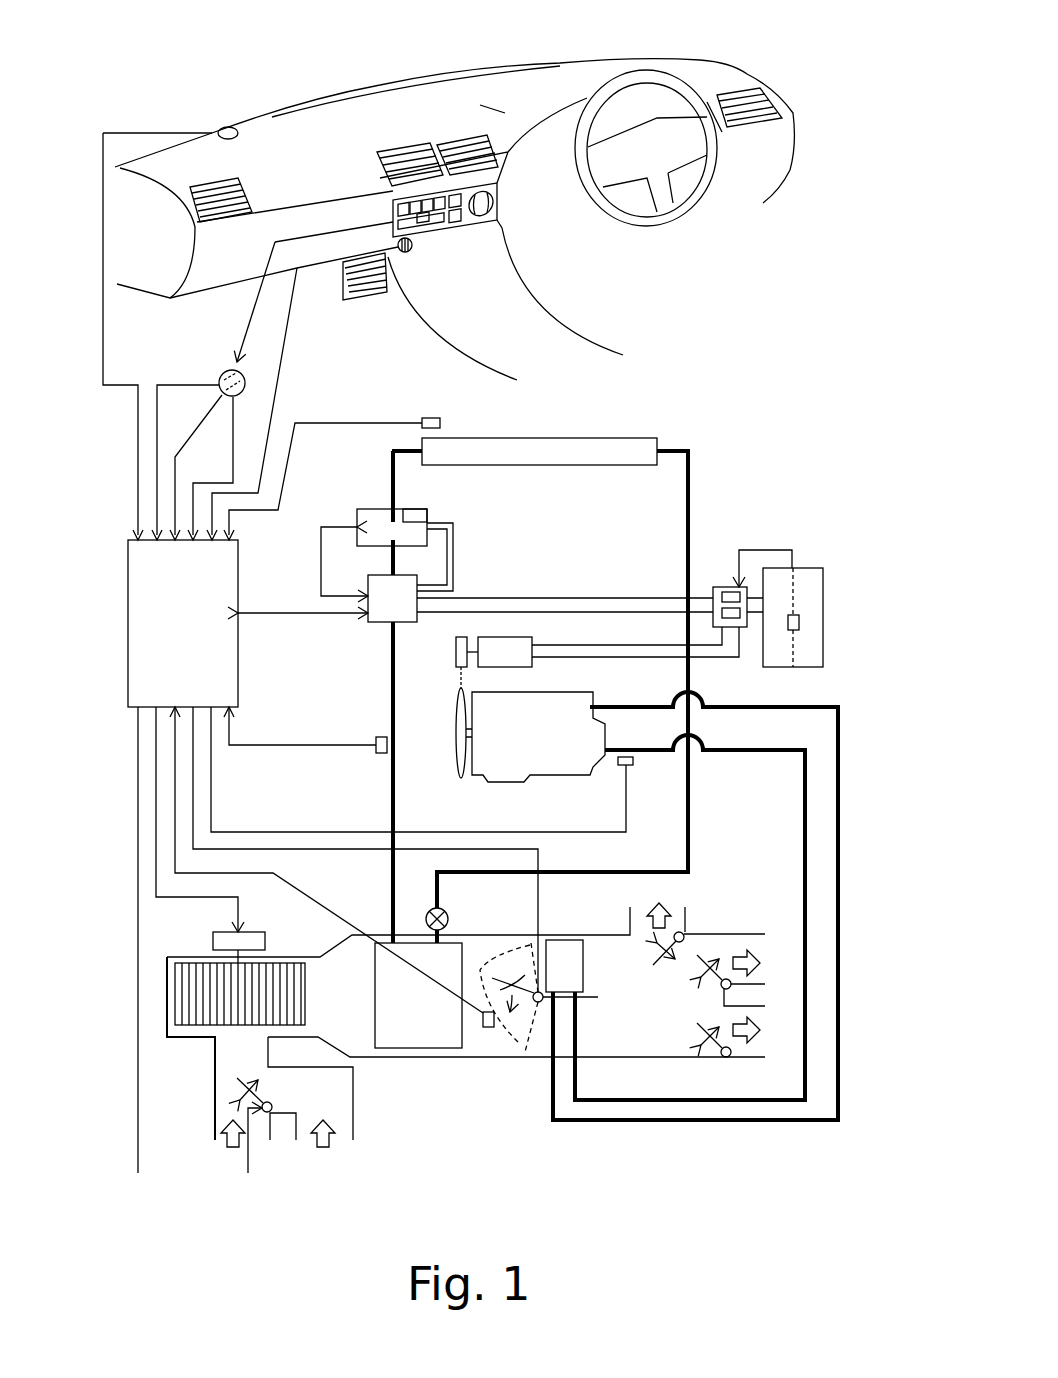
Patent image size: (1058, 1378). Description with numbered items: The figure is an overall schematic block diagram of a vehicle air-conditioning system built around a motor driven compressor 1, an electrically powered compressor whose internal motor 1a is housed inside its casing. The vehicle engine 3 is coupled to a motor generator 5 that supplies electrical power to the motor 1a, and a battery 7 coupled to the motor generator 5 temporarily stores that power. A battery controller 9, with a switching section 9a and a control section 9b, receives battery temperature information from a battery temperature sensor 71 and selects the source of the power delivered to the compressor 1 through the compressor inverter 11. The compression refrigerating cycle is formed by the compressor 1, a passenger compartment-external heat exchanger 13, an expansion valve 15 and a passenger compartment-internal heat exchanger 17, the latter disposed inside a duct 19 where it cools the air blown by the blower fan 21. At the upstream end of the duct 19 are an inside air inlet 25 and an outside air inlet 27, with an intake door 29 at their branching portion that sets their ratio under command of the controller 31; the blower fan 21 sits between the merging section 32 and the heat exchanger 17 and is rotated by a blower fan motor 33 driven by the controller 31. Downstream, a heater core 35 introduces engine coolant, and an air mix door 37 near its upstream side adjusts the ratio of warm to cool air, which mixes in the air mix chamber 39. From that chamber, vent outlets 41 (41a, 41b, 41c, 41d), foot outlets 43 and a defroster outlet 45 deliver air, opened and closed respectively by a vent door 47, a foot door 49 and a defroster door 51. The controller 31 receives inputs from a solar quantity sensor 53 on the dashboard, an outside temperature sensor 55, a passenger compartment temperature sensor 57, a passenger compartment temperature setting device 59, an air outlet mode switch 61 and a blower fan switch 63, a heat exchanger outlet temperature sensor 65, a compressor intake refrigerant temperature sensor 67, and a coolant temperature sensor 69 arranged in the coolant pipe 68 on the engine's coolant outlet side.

The motor driven compressor 1 is at (355, 520).
The internal motor 1a is at (418, 510).
The engine 3 is at (562, 776).
The motor generator 5 is at (532, 660).
The battery 7 is at (800, 567).
The battery controller 9 is at (725, 585).
The switching section 9a is at (722, 618).
The control section 9b is at (722, 596).
The compressor inverter 11 is at (372, 625).
The passenger compartment-external heat exchanger 13 is at (628, 437).
The expansion valve 15 is at (450, 912).
The passenger compartment-internal heat exchanger 17 is at (410, 1050).
The duct 19 is at (513, 1060).
The blower fan 21 is at (200, 1040).
The inside air inlet 25 is at (352, 1147).
The outside air inlet 27 is at (268, 1147).
The intake door 29 is at (235, 1100).
The controller 31 is at (238, 665).
The merging section 32 is at (245, 1040).
The blower fan motor 33 is at (252, 930).
The heater core 35 is at (560, 938).
The air mix door 37 is at (492, 978).
The air mix chamber 39 is at (615, 972).
The vent outlets 41 is at (765, 1058).
The vent outlet 41a is at (237, 222).
The vent outlet 41b is at (393, 152).
The vent outlet 41c is at (455, 142).
The vent outlet 41d is at (748, 95).
The foot outlets 43 is at (360, 300).
The defroster outlet 45 is at (380, 80).
The vent door 47 is at (700, 1040).
The foot door 49 is at (658, 970).
The defroster door 51 is at (710, 980).
The solar quantity sensor 53 is at (218, 128).
The outside temperature sensor 55 is at (430, 417).
The passenger compartment temperature sensor 57 is at (412, 248).
The passenger compartment temperature setting device 59 is at (225, 370).
The air outlet mode switch 61 is at (205, 408).
The blower fan switch 63 is at (238, 398).
The passenger compartment-internal heat exchanger outlet temperature sensor 65 is at (488, 1030).
The compressor intake refrigerant temperature sensor 67 is at (378, 755).
The coolant pipe 68 is at (750, 752).
The coolant temperature sensor 69 is at (633, 765).
The battery temperature sensor 71 is at (796, 645).